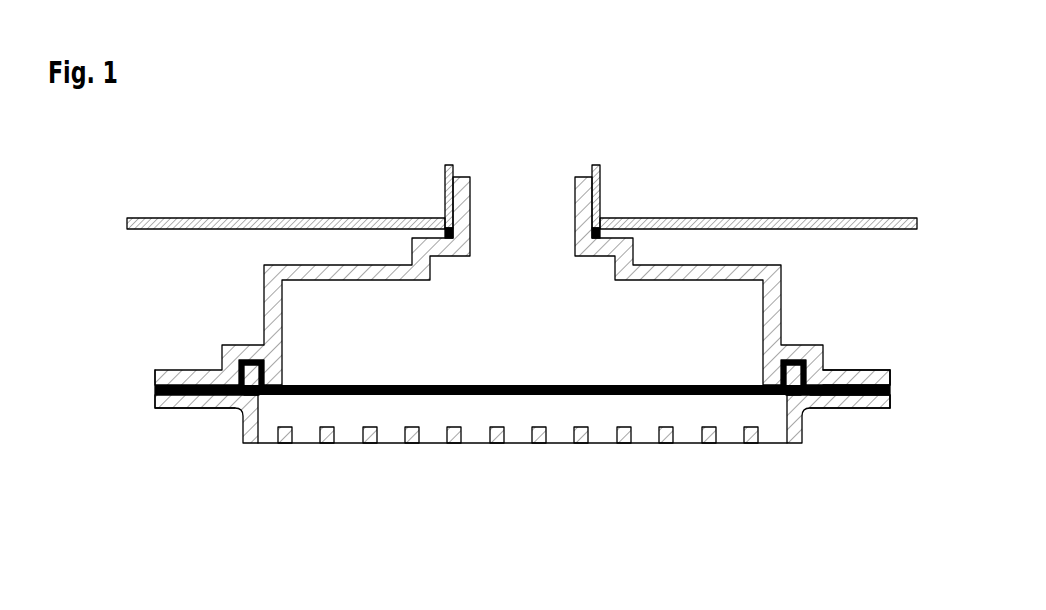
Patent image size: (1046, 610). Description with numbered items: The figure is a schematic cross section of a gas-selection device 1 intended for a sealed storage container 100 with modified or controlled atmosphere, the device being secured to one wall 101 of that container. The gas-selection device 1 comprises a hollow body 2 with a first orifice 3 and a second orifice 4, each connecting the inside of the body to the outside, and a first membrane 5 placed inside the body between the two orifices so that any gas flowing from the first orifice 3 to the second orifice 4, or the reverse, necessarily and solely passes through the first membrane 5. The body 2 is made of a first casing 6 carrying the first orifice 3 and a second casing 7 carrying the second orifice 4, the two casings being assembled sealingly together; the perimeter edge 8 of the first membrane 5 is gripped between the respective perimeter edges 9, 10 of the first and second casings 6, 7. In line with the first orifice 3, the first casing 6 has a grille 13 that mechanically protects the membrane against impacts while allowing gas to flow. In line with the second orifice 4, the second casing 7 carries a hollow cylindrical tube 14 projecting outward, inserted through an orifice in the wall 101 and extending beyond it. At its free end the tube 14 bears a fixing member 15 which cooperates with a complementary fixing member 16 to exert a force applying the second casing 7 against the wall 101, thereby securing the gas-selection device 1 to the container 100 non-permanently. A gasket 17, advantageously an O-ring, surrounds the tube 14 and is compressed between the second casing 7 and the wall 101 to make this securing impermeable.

The gas-selection device 1 is at (186, 456).
The hollow body 2 is at (95, 257).
The first orifice 3 is at (635, 412).
The second orifice 4 is at (470, 198).
The first membrane 5 is at (713, 393).
The first casing 6 is at (163, 402).
The second casing 7 is at (270, 330).
The perimeter edge of the first membrane 8 is at (892, 392).
The perimeter edge of the first casing 9 is at (855, 405).
The perimeter edge of the second casing 10 is at (865, 378).
The grille 13 is at (493, 433).
The hollow cylindrical tube 14 is at (522, 247).
The fixing member 15 is at (459, 197).
The complementary fixing member 16 is at (444, 176).
The gasket 17 is at (441, 234).
The sealed storage container 100 is at (760, 222).
The wall of the container 101 is at (758, 223).